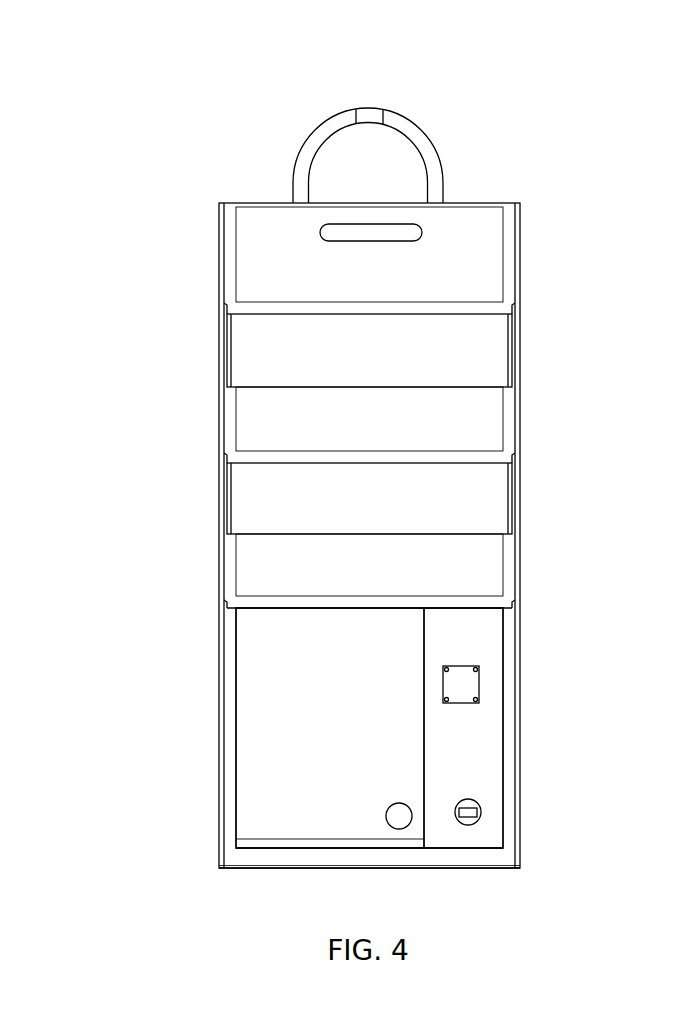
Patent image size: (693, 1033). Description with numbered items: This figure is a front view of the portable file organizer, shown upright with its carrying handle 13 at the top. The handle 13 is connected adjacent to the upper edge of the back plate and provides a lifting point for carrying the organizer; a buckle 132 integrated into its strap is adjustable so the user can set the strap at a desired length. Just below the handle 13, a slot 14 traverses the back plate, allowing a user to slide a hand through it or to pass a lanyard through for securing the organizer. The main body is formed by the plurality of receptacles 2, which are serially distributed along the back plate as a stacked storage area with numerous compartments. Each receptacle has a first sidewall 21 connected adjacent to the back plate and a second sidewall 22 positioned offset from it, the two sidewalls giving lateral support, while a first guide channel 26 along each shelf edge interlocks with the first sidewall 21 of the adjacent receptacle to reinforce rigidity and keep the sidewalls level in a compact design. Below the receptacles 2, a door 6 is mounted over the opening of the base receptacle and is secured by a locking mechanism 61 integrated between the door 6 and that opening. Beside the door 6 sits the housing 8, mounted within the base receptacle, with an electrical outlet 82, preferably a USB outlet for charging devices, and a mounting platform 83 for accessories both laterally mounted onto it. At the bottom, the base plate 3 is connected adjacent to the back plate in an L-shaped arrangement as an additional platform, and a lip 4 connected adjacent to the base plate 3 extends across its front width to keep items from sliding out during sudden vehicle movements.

The plurality of receptacles 2 is at (359, 411).
The base plate 3 is at (292, 860).
The lip 4 is at (252, 842).
The door 6 is at (250, 705).
The housing 8 is at (547, 770).
The handle 13 is at (428, 150).
The slot 14 is at (365, 247).
The first sidewall 21 is at (217, 271).
The second sidewall 22 is at (371, 770).
The first guide channel 26 is at (225, 365).
The locking mechanism 61 is at (397, 824).
The electrical outlet 82 is at (478, 805).
The mounting platform 83 is at (472, 681).
The buckle 132 is at (366, 111).